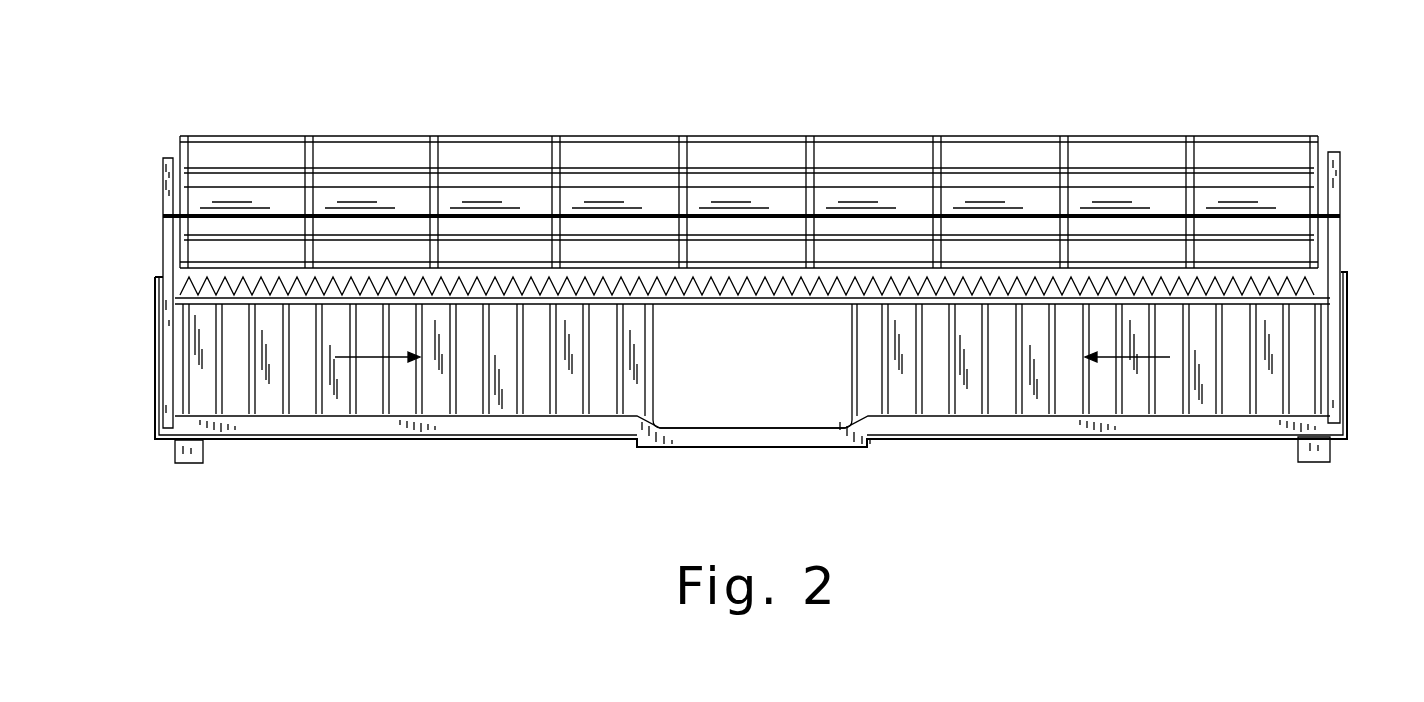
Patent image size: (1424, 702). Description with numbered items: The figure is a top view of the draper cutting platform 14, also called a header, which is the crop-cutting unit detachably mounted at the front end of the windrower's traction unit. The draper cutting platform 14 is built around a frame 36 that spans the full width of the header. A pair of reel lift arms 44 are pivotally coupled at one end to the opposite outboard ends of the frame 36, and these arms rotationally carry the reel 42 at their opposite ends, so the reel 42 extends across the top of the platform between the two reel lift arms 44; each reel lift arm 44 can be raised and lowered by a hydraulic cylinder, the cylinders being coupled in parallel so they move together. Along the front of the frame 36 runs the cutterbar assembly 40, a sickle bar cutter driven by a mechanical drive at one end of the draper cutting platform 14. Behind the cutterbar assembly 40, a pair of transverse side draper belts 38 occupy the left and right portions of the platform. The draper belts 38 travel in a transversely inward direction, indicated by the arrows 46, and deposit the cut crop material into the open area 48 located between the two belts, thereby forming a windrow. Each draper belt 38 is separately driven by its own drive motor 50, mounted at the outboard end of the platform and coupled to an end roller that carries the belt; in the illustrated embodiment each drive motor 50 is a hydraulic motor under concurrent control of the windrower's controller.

The draper cutting platform 14 is at (1262, 106).
The frame 36 is at (531, 438).
The transverse side draper belts 38 is at (242, 374).
The cutterbar assembly 40 is at (1112, 280).
The reel 42 is at (460, 142).
The reel lift arms 44 is at (170, 201).
The arrows 46 is at (374, 362).
The open area 48 is at (770, 380).
The drive motor 50 is at (174, 452).